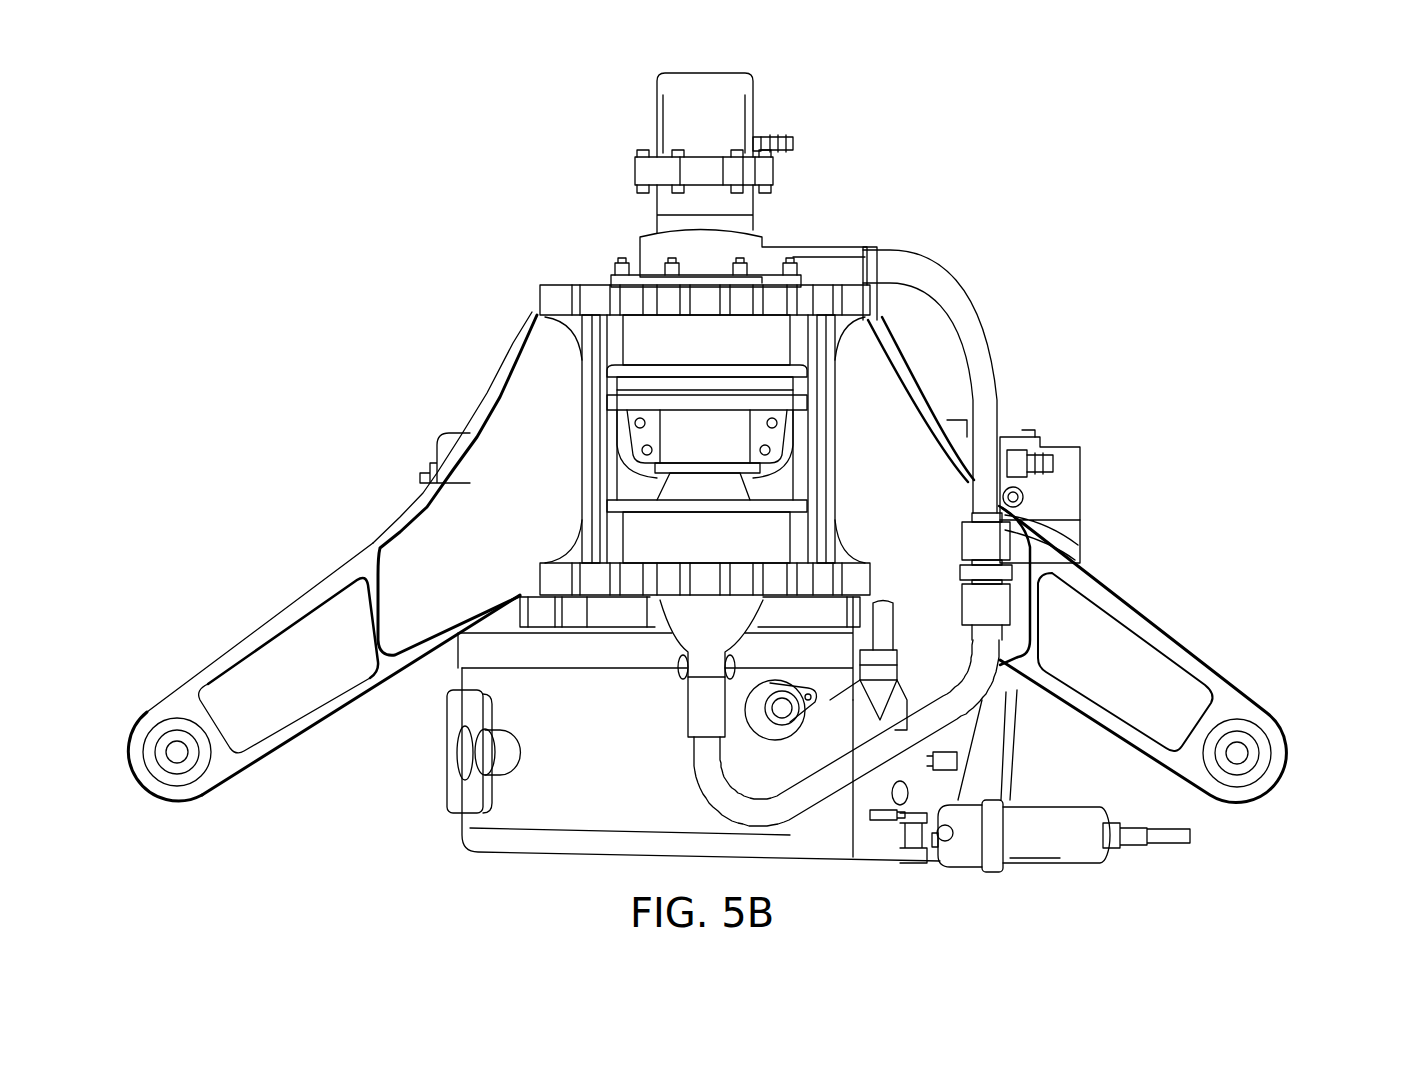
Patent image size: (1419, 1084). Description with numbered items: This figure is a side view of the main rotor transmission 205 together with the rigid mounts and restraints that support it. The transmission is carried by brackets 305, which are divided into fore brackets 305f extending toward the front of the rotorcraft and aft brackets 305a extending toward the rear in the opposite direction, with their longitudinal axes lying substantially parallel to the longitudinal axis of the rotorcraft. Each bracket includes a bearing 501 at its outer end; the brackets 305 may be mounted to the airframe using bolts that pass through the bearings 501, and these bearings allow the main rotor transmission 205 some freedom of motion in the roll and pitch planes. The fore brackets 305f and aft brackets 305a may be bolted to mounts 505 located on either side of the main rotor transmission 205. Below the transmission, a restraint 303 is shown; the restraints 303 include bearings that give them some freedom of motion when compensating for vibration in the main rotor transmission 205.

The brackets 305 is at (548, 284).
The fore brackets 305f is at (237, 643).
The aft brackets 305a is at (1288, 758).
The bearings 501 is at (172, 767).
The mounts 505 is at (820, 302).
The main rotor transmission 205 is at (1017, 750).
The restraints 303 is at (1055, 866).